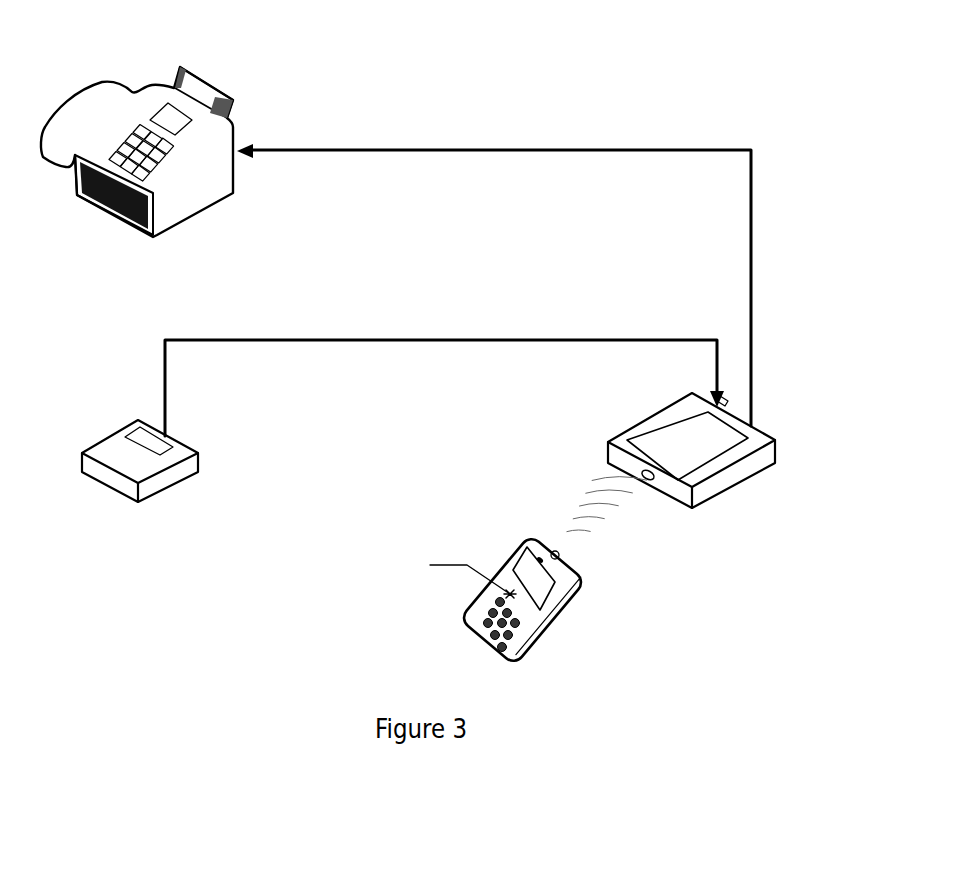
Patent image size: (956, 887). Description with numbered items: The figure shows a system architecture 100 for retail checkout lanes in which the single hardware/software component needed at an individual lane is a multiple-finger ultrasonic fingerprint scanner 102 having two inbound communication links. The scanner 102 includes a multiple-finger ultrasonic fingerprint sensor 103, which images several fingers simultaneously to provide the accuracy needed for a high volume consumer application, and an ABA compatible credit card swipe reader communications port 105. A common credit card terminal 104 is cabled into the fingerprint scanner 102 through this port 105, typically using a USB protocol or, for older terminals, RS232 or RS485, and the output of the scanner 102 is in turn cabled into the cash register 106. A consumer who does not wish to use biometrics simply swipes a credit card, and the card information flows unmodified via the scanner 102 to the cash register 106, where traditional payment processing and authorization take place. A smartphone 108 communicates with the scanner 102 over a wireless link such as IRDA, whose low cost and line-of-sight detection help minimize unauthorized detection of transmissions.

The system architecture 100 is at (577, 90).
The multiple-finger ultrasonic fingerprint scanner 102 is at (669, 474).
The multiple-finger ultrasonic fingerprint sensor 103 is at (687, 446).
The credit card terminal 104 is at (199, 463).
The credit card swipe reader communications port 105 is at (733, 402).
The cash register 106 is at (235, 182).
The smartphone 108 is at (567, 622).